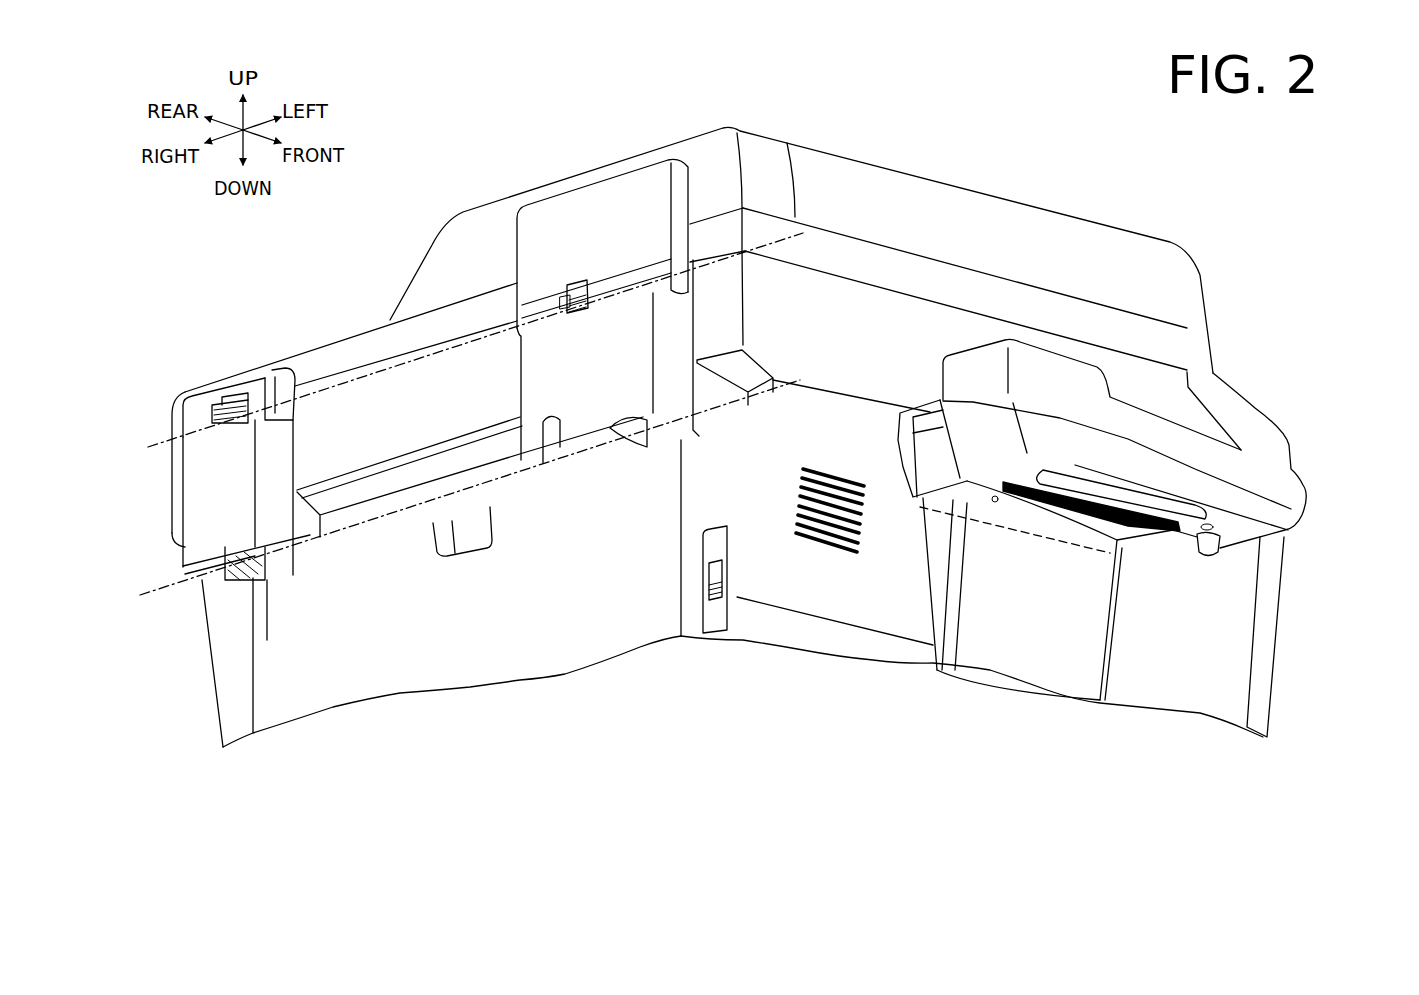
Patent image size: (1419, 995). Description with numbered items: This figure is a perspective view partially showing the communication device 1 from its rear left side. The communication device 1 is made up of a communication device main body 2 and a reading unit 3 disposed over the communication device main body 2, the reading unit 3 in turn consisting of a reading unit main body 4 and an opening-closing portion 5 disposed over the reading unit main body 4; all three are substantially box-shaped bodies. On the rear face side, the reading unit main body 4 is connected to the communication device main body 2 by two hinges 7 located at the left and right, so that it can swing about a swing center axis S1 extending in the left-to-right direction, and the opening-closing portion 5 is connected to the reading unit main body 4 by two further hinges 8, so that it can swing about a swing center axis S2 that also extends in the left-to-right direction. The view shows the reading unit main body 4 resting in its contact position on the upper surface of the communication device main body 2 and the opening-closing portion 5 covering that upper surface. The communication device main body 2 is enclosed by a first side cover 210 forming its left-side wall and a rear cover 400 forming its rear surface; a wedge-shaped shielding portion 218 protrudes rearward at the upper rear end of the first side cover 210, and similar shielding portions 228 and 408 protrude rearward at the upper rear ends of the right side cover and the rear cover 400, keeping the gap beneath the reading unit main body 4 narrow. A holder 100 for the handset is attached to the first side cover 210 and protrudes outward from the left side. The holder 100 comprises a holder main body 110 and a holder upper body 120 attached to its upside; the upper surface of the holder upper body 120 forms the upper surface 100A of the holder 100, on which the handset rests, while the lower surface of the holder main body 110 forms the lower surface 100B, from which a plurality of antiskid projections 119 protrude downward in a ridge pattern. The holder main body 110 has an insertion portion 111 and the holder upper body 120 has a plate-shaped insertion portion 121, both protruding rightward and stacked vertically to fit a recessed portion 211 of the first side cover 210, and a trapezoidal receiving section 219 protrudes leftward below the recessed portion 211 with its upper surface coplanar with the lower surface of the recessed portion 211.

The communication device 1 is at (847, 116).
The communication device main body 2 is at (1276, 707).
The reading unit 3 is at (1281, 277).
The reading unit main body 4 is at (1213, 342).
The opening-closing portion 5 is at (1209, 297).
The hinges 7 is at (268, 578).
The hinges 8 is at (575, 283).
The holder 100 is at (1150, 371).
The upper surface of the holder 100A is at (1063, 353).
The lower surface of the holder 100B is at (1230, 533).
The holder main body 110 is at (1245, 498).
The insertion portion 111 is at (921, 507).
The antiskid projections 119 is at (1175, 534).
The holder upper body 120 is at (1250, 469).
The plate-shaped insertion portion 121 is at (932, 422).
The first side cover 210 is at (1147, 692).
The recessed portion 211 is at (917, 437).
The shielding portion 218 is at (737, 597).
The receiving section 219 is at (1043, 623).
The shielding portion 228 is at (174, 538).
The rear cover 400 is at (466, 508).
The shielding portion 408 is at (373, 488).
The swing center axis S1 is at (148, 595).
The swing center axis S2 is at (148, 447).